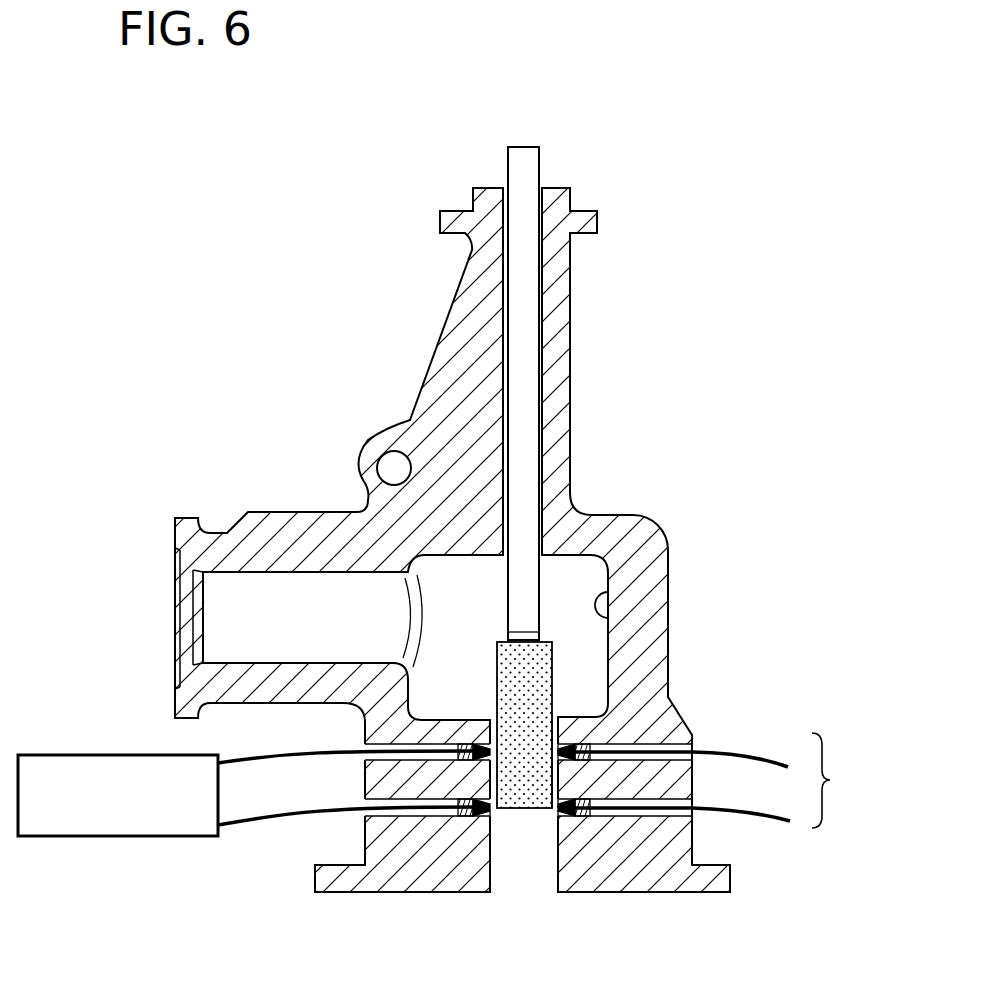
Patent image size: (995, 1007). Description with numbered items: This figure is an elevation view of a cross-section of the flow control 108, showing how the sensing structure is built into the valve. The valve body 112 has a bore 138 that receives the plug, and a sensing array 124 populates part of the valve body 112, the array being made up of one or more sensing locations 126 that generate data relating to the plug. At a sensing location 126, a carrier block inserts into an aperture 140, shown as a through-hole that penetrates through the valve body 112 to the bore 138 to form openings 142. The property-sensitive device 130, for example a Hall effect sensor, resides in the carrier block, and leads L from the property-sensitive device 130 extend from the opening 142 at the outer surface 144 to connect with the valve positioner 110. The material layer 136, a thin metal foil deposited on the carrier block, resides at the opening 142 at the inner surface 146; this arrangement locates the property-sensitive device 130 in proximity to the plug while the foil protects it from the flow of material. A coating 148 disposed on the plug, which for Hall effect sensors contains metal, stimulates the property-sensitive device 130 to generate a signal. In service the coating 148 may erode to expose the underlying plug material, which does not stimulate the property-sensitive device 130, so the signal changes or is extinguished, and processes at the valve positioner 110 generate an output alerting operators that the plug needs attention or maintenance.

The flow control 108 is at (632, 358).
The valve positioner 110 is at (135, 811).
The valve body 112 is at (663, 893).
The sensing array 124 is at (844, 780).
The sensing location 126 is at (356, 748).
The property-sensitive device 130 is at (487, 817).
The material layer 136 is at (484, 818).
The bore 138 is at (543, 898).
The aperture 140 is at (648, 745).
The openings 142 is at (556, 745).
The outer surface 144 is at (693, 847).
The inner surface 146 is at (600, 594).
The coating 148 is at (512, 698).